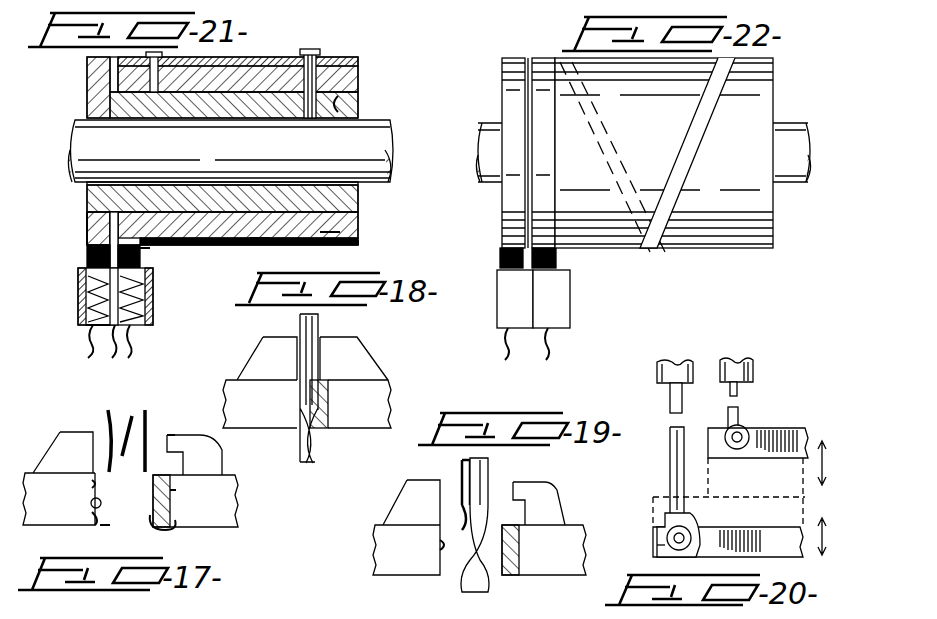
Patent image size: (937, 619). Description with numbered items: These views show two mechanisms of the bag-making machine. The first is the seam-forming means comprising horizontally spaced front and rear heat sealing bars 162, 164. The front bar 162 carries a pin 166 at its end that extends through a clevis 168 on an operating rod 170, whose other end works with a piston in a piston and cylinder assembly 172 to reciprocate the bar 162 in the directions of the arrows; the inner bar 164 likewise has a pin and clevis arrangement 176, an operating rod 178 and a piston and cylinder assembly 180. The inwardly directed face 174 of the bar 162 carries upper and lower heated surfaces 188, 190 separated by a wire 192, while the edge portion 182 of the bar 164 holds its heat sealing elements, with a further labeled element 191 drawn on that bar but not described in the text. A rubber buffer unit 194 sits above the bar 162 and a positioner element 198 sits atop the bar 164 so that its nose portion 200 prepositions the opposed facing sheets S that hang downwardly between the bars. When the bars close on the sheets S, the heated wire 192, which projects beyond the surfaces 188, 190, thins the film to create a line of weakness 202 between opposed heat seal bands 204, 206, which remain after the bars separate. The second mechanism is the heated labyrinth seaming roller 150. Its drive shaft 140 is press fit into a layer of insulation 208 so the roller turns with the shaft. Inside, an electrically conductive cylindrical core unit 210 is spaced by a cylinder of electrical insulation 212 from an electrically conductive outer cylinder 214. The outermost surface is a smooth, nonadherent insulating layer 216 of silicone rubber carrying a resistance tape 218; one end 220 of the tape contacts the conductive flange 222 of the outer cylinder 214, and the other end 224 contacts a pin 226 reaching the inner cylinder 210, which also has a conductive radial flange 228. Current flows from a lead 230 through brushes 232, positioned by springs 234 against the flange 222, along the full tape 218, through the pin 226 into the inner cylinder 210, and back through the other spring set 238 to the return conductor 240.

In FIG. 21, the drive shaft 140 is at (385, 124).
In FIG. 22, the drive shaft 140 is at (790, 125).
In FIG. 21, the heated labyrinth seaming roller 150 is at (372, 242).
In FIG. 20, the front heat sealing bar 162 is at (656, 540).
In FIG. 17, the rear heat sealing bar 164 is at (218, 526).
In FIG. 20, the rear heat sealing bar 164 is at (806, 440).
In FIG. 20, the pin 166 is at (660, 548).
In FIG. 20, the clevis 168 is at (660, 524).
In FIG. 20, the operating rod 170 is at (670, 454).
In FIG. 20, the piston and cylinder assembly 172 is at (680, 368).
In FIG. 17, the inwardly directed face 174 is at (110, 520).
In FIG. 20, the inwardly directed face 174 is at (750, 527).
In FIG. 20, the pin and clevis arrangement 176 is at (748, 434).
In FIG. 20, the operating rod 178 is at (738, 396).
In FIG. 20, the piston and cylinder assembly 180 is at (736, 358).
In FIG. 17, the edge portion 182 is at (175, 512).
In FIG. 20, the edge portion 182 is at (768, 462).
In FIG. 17, the upper heated surface 188 is at (92, 487).
In FIG. 17, the lower heated surface 190 is at (96, 522).
In FIG. 17, the slot 191 is at (172, 494).
In FIG. 17, the wire 192 is at (92, 504).
In FIG. 18, the rubber buffer unit 194 is at (284, 372).
In FIG. 17, the rubber buffer unit 194 is at (80, 468).
In FIG. 19, the rubber buffer unit 194 is at (424, 518).
In FIG. 18, the positioner element 198 is at (355, 382).
In FIG. 17, the positioner element 198 is at (196, 455).
In FIG. 19, the positioner element 198 is at (543, 503).
In FIG. 17, the nose portion 200 is at (167, 432).
In FIG. 18, the line of weakness 202 is at (330, 396).
In FIG. 19, the line of weakness 202 is at (496, 520).
In FIG. 19, the heat seal band 204 is at (460, 490).
In FIG. 19, the heat seal band 206 is at (462, 585).
In FIG. 21, the layer of insulation 208 is at (338, 100).
In FIG. 21, the inner electrically conductive cylindrical core unit 210 is at (125, 196).
In FIG. 21, the cylinder of electrical insulation 212 is at (233, 212).
In FIG. 21, the outer cylinder 214 is at (325, 234).
In FIG. 21, the nonadherent layer 216 is at (218, 250).
In FIG. 21, the resistance tape 218 is at (250, 245).
In FIG. 22, the resistance tape 218 is at (710, 114).
In FIG. 22, the end of tape 220 is at (568, 62).
In FIG. 21, the flange 222 is at (142, 250).
In FIG. 22, the flange 222 is at (518, 58).
In FIG. 21, the other end of tape 224 is at (316, 58).
In FIG. 21, the pin 226 is at (340, 106).
In FIG. 21, the radial flange 228 is at (88, 226).
In FIG. 21, the lead 230 is at (88, 300).
In FIG. 21, the brushes 232 is at (87, 262).
In FIG. 21, the springs 234 is at (110, 352).
In FIG. 21, the spring set 238 is at (80, 292).
In FIG. 21, the return conductor 240 is at (86, 330).
In FIG. 17, the sheets S is at (100, 420).